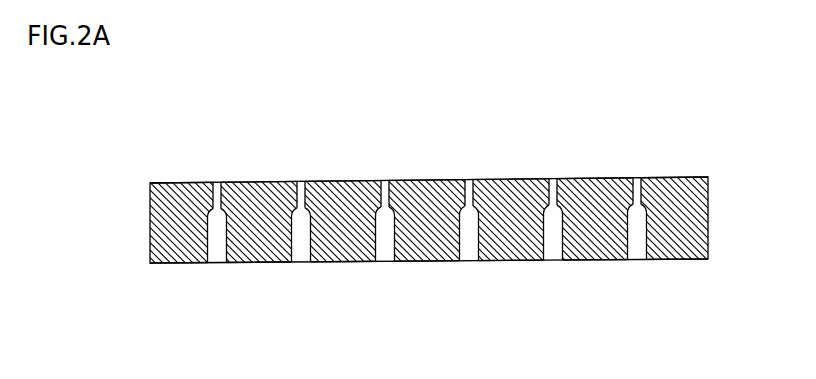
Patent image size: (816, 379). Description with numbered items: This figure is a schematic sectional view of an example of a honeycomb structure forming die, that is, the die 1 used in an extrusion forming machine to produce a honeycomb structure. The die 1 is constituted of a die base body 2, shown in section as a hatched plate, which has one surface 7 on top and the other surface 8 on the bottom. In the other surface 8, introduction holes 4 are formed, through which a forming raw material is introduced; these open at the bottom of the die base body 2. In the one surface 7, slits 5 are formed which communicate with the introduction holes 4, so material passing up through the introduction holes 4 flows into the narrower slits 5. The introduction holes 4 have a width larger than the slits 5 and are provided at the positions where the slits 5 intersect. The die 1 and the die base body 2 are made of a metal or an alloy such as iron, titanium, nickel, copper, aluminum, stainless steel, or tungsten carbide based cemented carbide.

The die 1 is at (427, 194).
The die base body 2 is at (178, 221).
The introduction holes 4 is at (216, 237).
The slits 5 is at (216, 192).
The one surface 7 is at (417, 179).
The other surface 8 is at (427, 262).